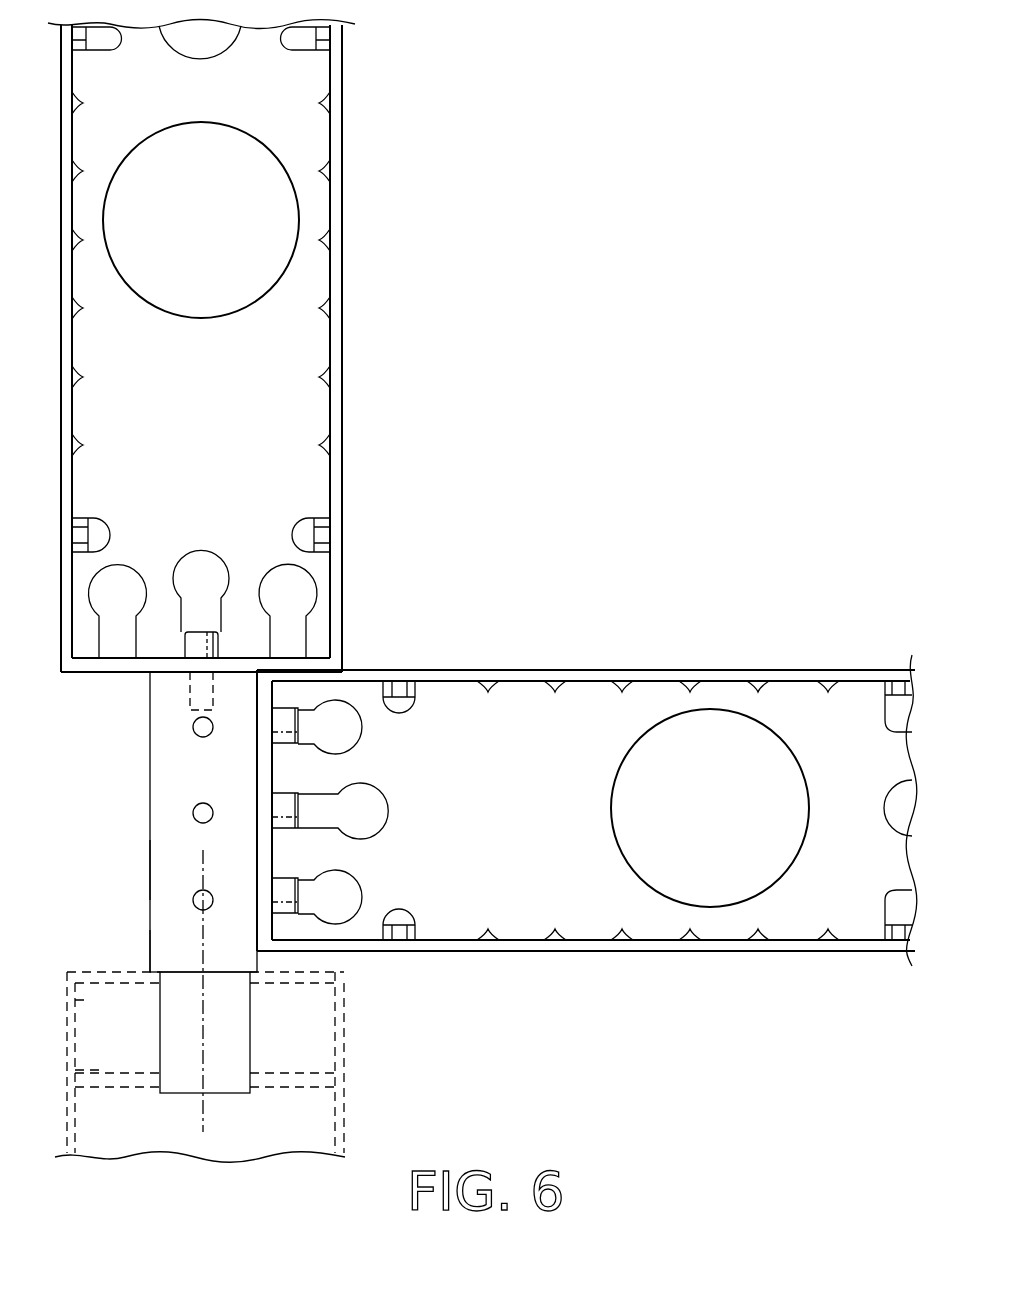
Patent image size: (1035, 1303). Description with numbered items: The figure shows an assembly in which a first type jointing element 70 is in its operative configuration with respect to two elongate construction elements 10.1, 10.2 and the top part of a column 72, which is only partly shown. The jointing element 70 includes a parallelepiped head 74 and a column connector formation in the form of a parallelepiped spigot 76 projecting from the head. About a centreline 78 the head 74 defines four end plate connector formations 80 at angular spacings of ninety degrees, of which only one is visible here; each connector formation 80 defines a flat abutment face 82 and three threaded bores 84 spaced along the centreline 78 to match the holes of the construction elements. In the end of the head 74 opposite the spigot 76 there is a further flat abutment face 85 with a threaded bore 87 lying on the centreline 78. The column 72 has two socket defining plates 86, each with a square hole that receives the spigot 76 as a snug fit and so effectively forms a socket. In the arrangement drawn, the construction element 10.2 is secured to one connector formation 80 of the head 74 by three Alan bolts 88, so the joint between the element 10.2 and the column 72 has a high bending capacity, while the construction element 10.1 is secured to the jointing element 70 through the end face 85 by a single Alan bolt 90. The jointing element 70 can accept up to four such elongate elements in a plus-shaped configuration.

The elongate construction element 10.1 is at (352, 371).
The elongate construction element 10.2 is at (637, 664).
The first type jointing element 70 is at (202, 902).
The column 72 is at (356, 1007).
The parallelepiped head 74 is at (150, 950).
The parallelepiped spigot 76 is at (172, 1030).
The centreline 78 is at (205, 1103).
The end plate connector formation 80 is at (148, 869).
The flat abutment face 82 is at (217, 782).
The threaded bore 84 is at (183, 727).
The flat abutment face 85 is at (231, 672).
The socket defining plate 86 is at (100, 1070).
The threaded bore 87 is at (182, 700).
The Alan bolt 88 is at (299, 725).
The Alan bolt 90 is at (199, 632).